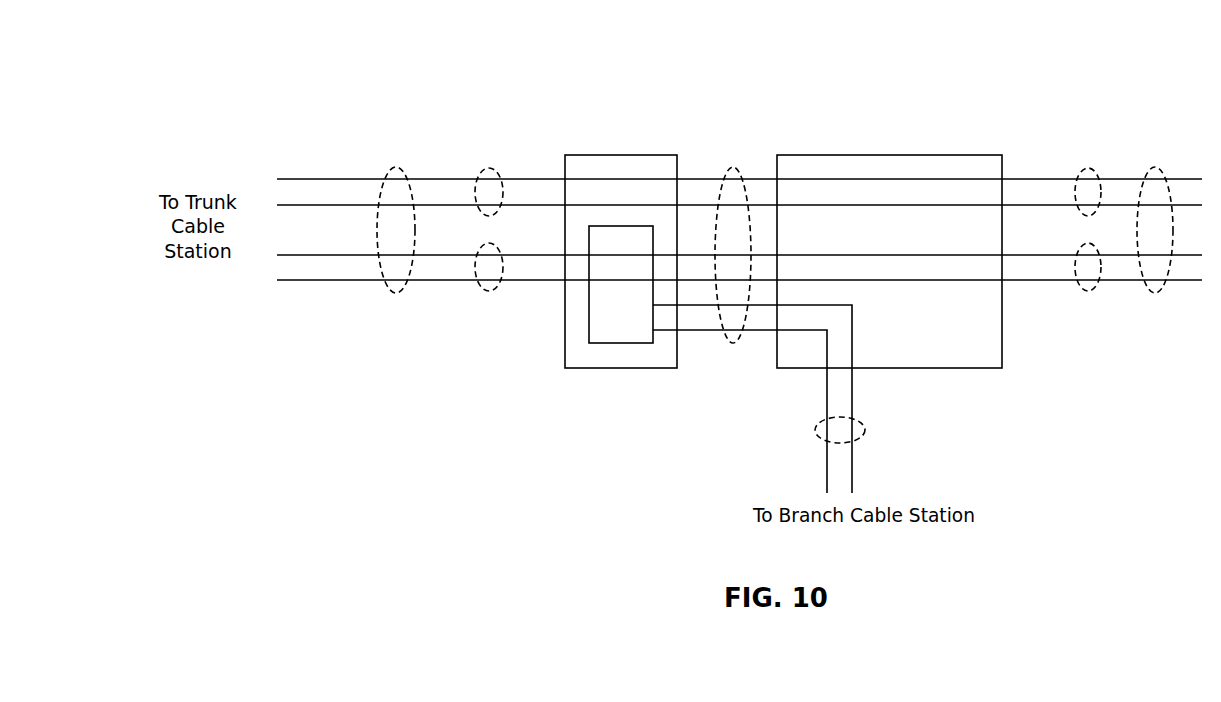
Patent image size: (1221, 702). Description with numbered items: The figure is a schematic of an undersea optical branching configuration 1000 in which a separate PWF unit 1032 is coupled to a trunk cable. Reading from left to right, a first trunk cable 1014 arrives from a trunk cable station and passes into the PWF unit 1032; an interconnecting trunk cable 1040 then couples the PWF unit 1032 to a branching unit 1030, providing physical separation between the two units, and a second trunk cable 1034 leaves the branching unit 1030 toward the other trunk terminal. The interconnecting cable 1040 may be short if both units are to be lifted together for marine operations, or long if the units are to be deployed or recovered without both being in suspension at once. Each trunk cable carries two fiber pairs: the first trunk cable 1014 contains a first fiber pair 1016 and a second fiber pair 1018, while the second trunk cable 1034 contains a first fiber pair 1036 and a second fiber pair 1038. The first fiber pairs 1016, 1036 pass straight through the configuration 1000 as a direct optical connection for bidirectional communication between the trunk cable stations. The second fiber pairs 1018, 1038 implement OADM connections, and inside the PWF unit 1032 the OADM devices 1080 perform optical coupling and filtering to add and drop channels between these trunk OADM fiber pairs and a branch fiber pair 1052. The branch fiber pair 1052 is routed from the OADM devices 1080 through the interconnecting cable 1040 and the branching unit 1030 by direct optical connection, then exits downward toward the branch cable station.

The branching configuration 1000 is at (666, 47).
The first trunk cable 1014 is at (396, 167).
The first fiber pair 1016 is at (489, 168).
The second fiber pair 1018 is at (489, 292).
The PWF unit 1032 is at (600, 155).
The OADM devices 1080 is at (619, 344).
The interconnecting trunk cable 1040 is at (733, 167).
The branching unit 1030 is at (830, 156).
The first fiber pair 1036 is at (1088, 168).
The second fiber pair 1038 is at (1088, 292).
The second trunk cable 1034 is at (1155, 167).
The branch fiber pair 1052 is at (815, 430).